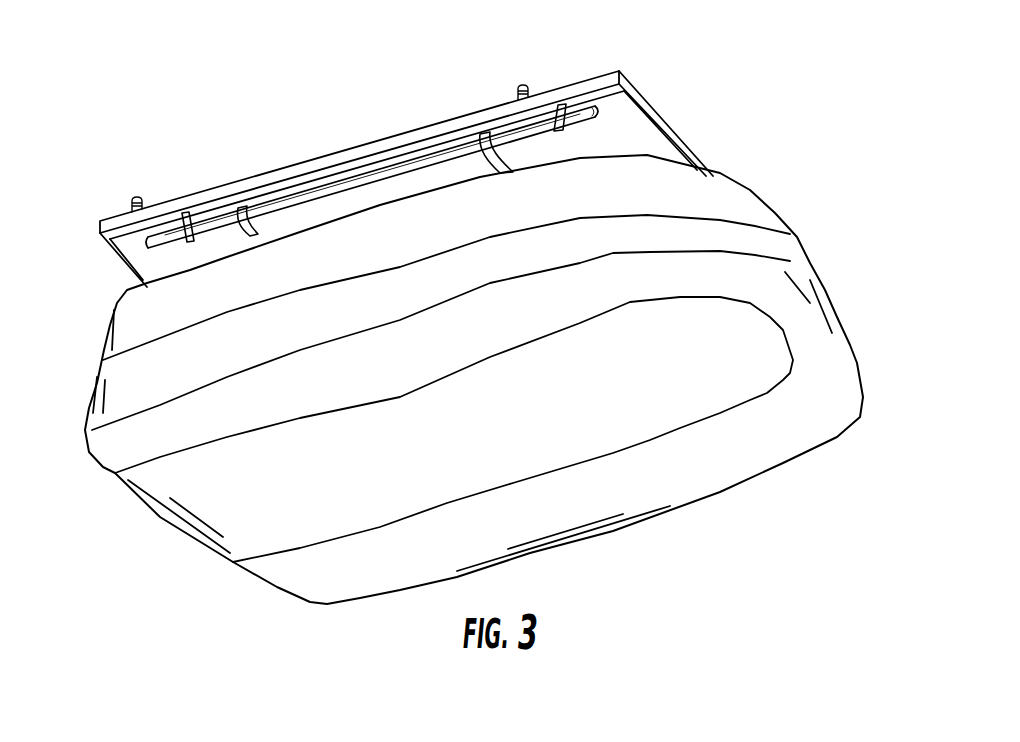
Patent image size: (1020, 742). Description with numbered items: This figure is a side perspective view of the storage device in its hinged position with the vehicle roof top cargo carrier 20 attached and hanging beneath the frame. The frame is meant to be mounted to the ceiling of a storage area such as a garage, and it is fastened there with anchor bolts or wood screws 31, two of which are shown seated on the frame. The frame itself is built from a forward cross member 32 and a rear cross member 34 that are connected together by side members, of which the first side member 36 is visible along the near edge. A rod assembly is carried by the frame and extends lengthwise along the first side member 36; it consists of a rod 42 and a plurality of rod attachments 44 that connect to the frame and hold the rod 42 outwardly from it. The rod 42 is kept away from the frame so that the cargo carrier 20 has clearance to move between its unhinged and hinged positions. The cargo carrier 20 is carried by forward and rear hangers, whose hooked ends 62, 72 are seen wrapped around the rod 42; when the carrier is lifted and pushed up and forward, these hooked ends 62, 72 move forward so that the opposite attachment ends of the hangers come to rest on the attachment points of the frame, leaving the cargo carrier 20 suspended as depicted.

The cargo carrier 20 is at (856, 400).
The anchor bolt or wood screw 31 is at (131, 198).
The forward cross member 32 is at (387, 174).
The rear cross member 34 is at (128, 257).
The first side member 36 is at (382, 138).
The rod 42 is at (318, 186).
The rod attachment 44 is at (182, 215).
The hooked end 62 is at (480, 134).
The hooked end 72 is at (243, 207).